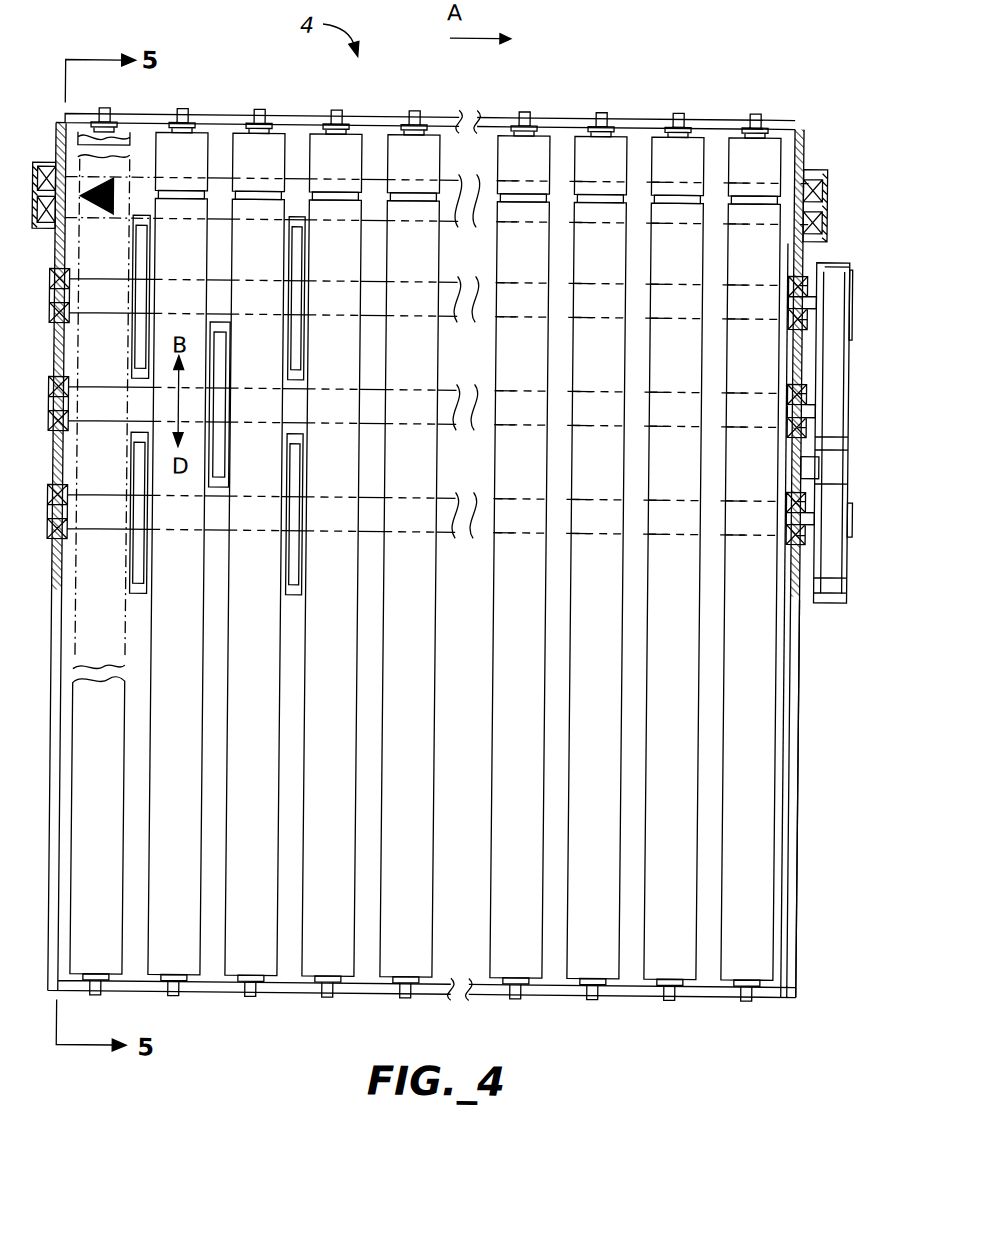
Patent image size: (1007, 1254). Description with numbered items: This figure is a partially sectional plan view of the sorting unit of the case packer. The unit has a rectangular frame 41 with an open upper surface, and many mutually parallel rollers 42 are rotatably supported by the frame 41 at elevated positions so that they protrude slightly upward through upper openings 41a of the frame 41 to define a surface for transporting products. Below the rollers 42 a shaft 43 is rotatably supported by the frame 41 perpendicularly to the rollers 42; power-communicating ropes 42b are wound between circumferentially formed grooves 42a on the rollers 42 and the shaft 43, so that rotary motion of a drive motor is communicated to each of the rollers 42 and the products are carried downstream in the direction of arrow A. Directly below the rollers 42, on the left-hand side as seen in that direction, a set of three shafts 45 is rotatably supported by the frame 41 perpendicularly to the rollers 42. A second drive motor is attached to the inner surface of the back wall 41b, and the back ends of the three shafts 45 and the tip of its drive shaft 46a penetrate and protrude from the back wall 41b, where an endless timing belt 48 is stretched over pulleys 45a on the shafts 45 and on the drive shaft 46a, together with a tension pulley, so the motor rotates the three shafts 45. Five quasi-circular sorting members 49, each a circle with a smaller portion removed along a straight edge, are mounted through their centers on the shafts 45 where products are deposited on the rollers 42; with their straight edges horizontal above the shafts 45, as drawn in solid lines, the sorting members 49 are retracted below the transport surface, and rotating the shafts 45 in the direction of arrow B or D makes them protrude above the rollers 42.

The frame 41 is at (722, 123).
The upper openings 41a is at (793, 652).
The back wall 41b is at (800, 697).
The rollers 42 is at (234, 966).
The grooves 42a is at (317, 197).
The power-communicating ropes 42b is at (351, 190).
The shaft 43 is at (215, 193).
The shafts 45 is at (112, 256).
The pulleys 45a is at (850, 332).
The drive shaft 46a is at (850, 505).
The endless timing belt 48 is at (850, 362).
The sorting members 49 is at (138, 309).